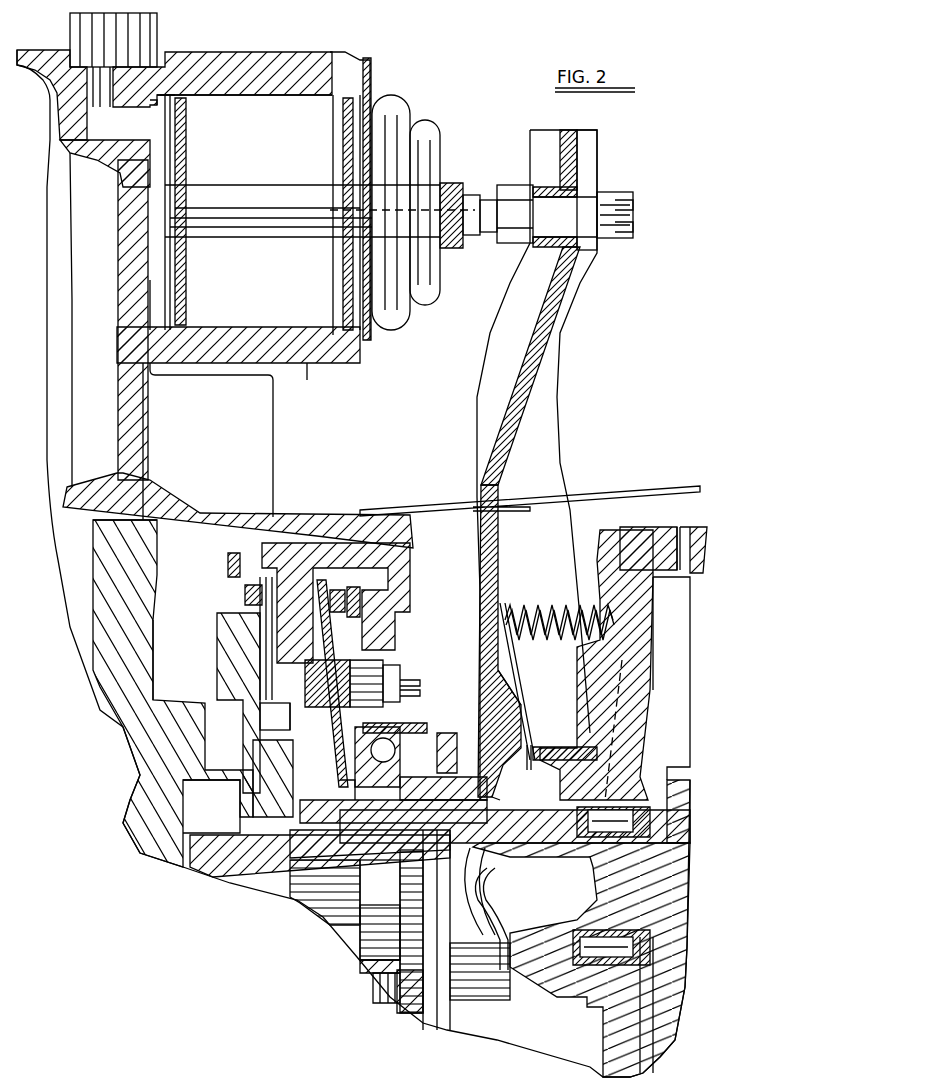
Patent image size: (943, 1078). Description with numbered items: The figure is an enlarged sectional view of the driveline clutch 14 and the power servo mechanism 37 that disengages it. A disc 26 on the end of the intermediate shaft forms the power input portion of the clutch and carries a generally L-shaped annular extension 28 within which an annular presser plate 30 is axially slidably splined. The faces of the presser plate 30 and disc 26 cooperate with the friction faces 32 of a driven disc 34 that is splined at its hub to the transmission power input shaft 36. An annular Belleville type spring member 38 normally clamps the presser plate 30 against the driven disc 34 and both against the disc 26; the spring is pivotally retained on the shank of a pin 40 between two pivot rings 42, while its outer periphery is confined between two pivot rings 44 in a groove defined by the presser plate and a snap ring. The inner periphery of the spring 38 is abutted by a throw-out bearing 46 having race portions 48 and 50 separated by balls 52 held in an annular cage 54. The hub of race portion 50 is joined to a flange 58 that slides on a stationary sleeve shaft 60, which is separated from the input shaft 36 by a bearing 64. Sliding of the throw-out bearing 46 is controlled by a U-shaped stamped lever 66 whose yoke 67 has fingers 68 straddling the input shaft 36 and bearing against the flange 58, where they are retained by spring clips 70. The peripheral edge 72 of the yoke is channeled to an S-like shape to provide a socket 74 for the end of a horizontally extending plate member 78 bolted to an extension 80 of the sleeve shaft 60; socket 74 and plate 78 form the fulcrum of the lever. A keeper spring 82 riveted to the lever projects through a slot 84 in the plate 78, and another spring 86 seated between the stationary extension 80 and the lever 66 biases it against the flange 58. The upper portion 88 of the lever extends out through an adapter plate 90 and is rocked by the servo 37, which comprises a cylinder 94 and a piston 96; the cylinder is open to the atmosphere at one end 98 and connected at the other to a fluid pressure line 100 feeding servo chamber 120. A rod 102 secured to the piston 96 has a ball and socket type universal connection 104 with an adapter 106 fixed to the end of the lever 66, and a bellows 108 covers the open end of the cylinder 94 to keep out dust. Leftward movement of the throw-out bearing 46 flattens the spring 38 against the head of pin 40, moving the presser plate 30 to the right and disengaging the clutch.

The driveline clutch 14 is at (294, 499).
The disc 26 is at (227, 627).
The L-shaped annular extension 28 is at (410, 583).
The presser plate 30 is at (233, 572).
The friction faces 32 is at (260, 593).
The driven disc 34 is at (233, 608).
The transmission power input shaft 36 is at (210, 867).
The power servo mechanism 37 is at (394, 85).
The Belleville type spring member 38 is at (324, 683).
The pin 40 is at (340, 695).
The pivot rings 42 is at (309, 725).
The pivot rings 44 is at (344, 610).
The throw-out bearing 46 is at (355, 598).
The race portion 48 is at (355, 750).
The race portion 50 is at (430, 775).
The balls 52 is at (400, 750).
The annular cage 54 is at (355, 778).
The flange 58 is at (459, 752).
The stationary sleeve shaft 60 is at (483, 833).
The bearing 64 is at (620, 787).
The lever 66 is at (572, 396).
The yoke 67 is at (465, 881).
The fingers 68 is at (473, 910).
The spring clips 70 is at (470, 907).
The peripheral edge 72 is at (513, 707).
The socket 74 is at (493, 775).
The plate member 78 is at (547, 747).
The extension 80 is at (623, 700).
The keeper spring 82 is at (520, 660).
The slot 84 is at (528, 762).
The spring 86 is at (547, 607).
The upper portion 88 is at (493, 448).
The adapter plate 90 is at (613, 490).
The cylinder 94 is at (267, 67).
The piston 96 is at (187, 165).
The open end 98 is at (173, 95).
The fluid pressure line 100 is at (150, 22).
The rod 102 is at (283, 222).
The ball and socket type universal connection 104 is at (483, 194).
The adapter 106 is at (517, 244).
The bellows 108 is at (427, 163).
The servo chamber 120 is at (154, 173).